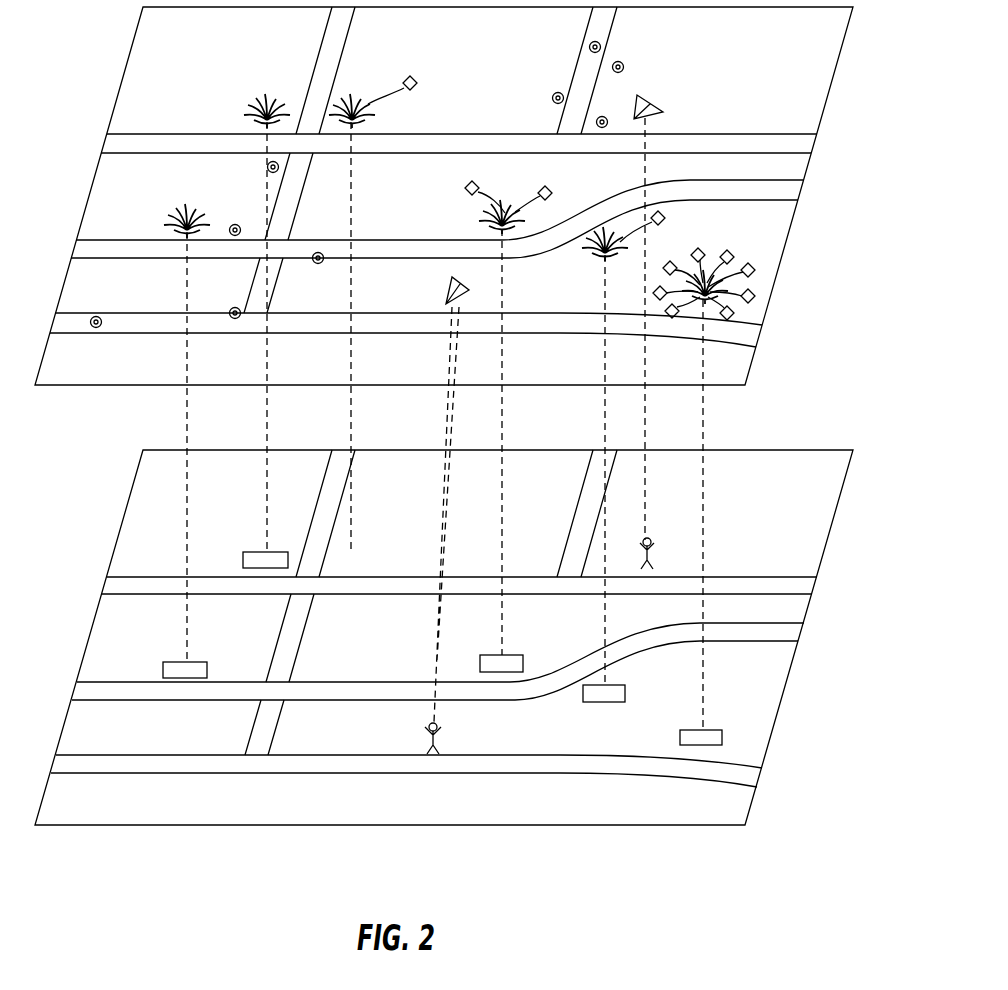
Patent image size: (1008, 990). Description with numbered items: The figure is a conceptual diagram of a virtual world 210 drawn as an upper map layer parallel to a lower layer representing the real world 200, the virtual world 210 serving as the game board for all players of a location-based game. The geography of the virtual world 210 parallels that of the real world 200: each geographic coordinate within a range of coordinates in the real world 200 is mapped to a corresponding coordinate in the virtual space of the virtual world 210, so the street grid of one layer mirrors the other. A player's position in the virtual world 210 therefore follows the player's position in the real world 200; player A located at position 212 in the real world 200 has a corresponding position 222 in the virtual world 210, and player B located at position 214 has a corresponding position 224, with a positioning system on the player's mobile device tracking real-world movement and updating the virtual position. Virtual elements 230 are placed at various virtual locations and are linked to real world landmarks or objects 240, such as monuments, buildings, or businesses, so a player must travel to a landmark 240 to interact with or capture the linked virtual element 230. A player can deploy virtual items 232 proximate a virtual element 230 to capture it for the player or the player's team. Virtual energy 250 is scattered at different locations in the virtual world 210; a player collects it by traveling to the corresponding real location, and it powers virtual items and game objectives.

The real world 200 is at (822, 554).
The virtual world 210 is at (826, 114).
The position of player A in the real world 212 is at (428, 727).
The position of player B in the real world 214 is at (652, 539).
The position of player A in the virtual world 222 is at (470, 292).
The position of player B in the virtual world 224 is at (661, 113).
The virtual element 230 is at (268, 98).
The virtual item 232 is at (414, 79).
The real world landmark or object 240 is at (262, 552).
The virtual energy 250 is at (625, 66).